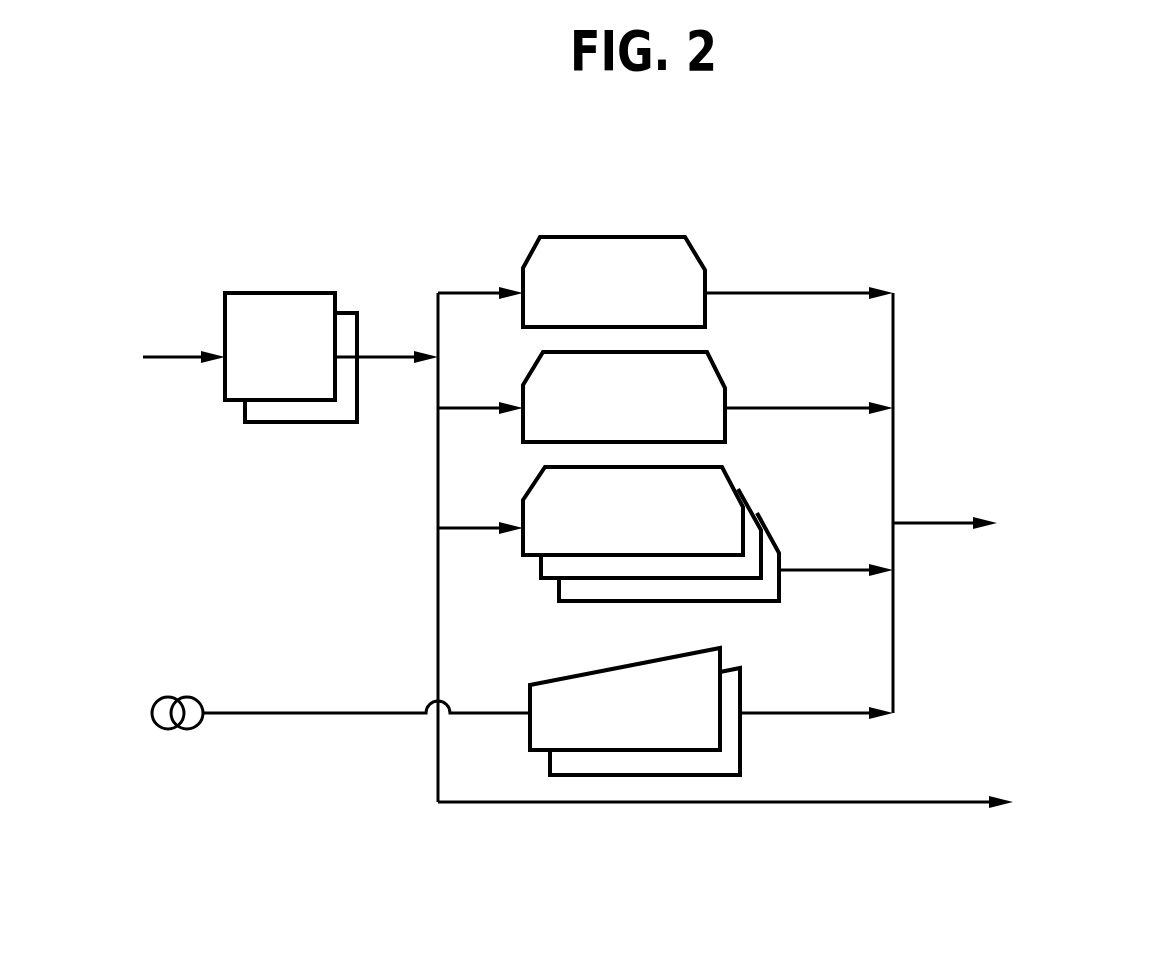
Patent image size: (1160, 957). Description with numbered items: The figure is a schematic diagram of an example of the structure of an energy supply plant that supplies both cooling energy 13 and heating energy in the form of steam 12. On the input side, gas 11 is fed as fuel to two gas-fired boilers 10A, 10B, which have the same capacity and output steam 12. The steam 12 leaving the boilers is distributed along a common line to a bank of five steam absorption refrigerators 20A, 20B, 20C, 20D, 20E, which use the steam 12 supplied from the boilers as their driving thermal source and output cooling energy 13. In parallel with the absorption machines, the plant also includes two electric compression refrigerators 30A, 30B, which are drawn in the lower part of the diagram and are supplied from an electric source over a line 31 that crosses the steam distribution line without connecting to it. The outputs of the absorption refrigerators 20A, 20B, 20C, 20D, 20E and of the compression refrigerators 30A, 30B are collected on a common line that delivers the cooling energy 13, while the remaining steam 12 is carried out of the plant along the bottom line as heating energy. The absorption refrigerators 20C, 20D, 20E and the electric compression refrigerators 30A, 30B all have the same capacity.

The gas 11 is at (197, 355).
The gas-fired boiler 10A is at (224, 383).
The gas-fired boiler 10B is at (268, 423).
The steam 12 is at (405, 365).
The cooling energy 13 is at (958, 521).
The steam absorption refrigerator 20A is at (693, 252).
The steam absorption refrigerator 20B is at (722, 372).
The steam absorption refrigerator 20C is at (725, 468).
The steam absorption refrigerator 20D is at (750, 508).
The steam absorption refrigerator 20E is at (778, 553).
The electric compression refrigerator 30A is at (722, 656).
The electric compression refrigerator 30B is at (742, 692).
The power supply line 31 is at (360, 712).